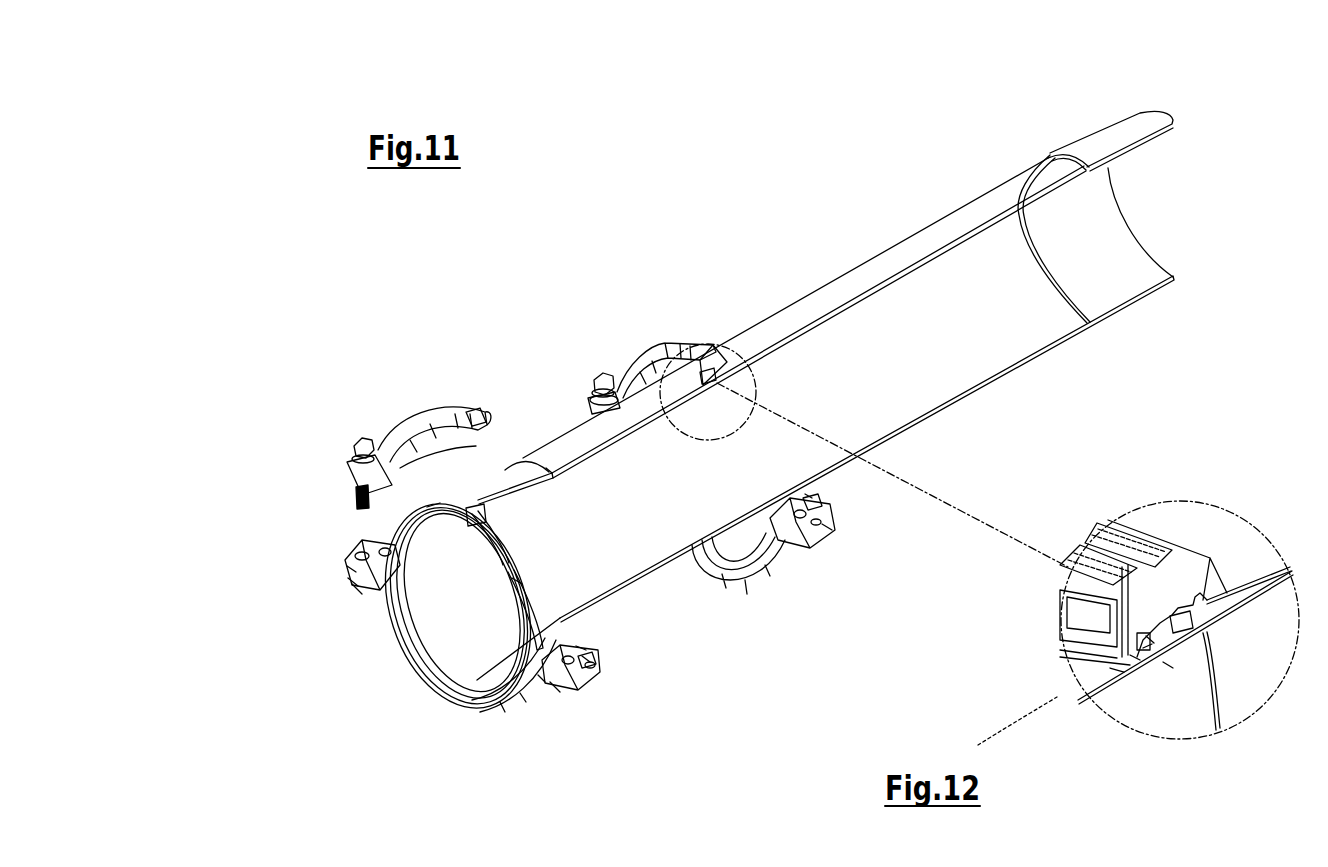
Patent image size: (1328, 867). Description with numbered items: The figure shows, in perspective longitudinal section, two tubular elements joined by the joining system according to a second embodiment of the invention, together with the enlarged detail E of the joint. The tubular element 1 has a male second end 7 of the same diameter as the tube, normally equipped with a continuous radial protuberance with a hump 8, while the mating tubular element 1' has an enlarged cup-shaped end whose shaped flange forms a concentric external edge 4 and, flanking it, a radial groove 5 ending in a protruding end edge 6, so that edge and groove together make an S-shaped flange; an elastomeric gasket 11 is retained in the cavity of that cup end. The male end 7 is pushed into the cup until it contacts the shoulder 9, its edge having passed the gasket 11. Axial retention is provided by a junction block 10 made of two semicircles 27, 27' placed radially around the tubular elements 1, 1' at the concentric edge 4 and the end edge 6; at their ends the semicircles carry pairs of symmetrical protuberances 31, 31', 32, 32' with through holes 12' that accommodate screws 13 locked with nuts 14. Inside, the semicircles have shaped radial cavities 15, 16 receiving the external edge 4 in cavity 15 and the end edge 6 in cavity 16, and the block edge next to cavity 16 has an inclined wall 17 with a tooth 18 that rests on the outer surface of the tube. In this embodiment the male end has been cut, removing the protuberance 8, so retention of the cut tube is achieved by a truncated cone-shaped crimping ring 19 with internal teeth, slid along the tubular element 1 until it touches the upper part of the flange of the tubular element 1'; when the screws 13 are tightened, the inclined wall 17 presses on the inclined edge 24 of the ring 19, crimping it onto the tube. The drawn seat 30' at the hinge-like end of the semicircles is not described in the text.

In FIG. 11, the tubular element 1 is at (614, 509).
In FIG. 11, the tubular element 1' is at (848, 385).
In FIG. 12, the tubular element 1' is at (1180, 529).
In FIG. 11, the concentric edge 4 is at (427, 507).
In FIG. 12, the concentric edge 4 is at (1200, 655).
In FIG. 11, the radial groove 5 is at (480, 520).
In FIG. 12, the radial groove 5 is at (1150, 640).
In FIG. 12, the end edge 6 is at (1147, 645).
In FIG. 11, the second end 7 is at (1120, 128).
In FIG. 11, the protuberance with a hump 8 is at (1050, 155).
In FIG. 11, the shoulder 9 is at (770, 328).
In FIG. 12, the shoulder 9 is at (1217, 730).
In FIG. 11, the junction block 10 is at (633, 363).
In FIG. 11, the elastomeric gasket 11 is at (477, 517).
In FIG. 12, the elastomeric gasket 11 is at (1175, 620).
In FIG. 11, the through hole 12' is at (560, 627).
In FIG. 11, the screw 13 is at (358, 447).
In FIG. 11, the nut 14 is at (357, 588).
In FIG. 11, the radial cavity 15 is at (470, 415).
In FIG. 12, the radial cavity 15 is at (1178, 608).
In FIG. 11, the radial cavity 16 is at (520, 460).
In FIG. 12, the radial cavity 16 is at (1150, 640).
In FIG. 12, the inclined wall 17 is at (1068, 641).
In FIG. 12, the tooth 18 is at (1117, 670).
In FIG. 11, the crimping ring 19 is at (517, 580).
In FIG. 12, the crimping ring 19 is at (1137, 657).
In FIG. 12, the inclined edge 24 is at (1137, 655).
In FIG. 11, the semicircle 27 is at (530, 313).
In FIG. 12, the semicircle 27 is at (1116, 562).
In FIG. 11, the semicircle 27' is at (586, 606).
In FIG. 11, the hinge pin seat 30' is at (589, 607).
In FIG. 11, the protuberance 31 is at (441, 418).
In FIG. 11, the protuberance 31' is at (264, 609).
In FIG. 11, the protuberance 32 is at (592, 405).
In FIG. 11, the protuberance 32' is at (725, 567).
In FIG. 11, the detail E is at (710, 337).